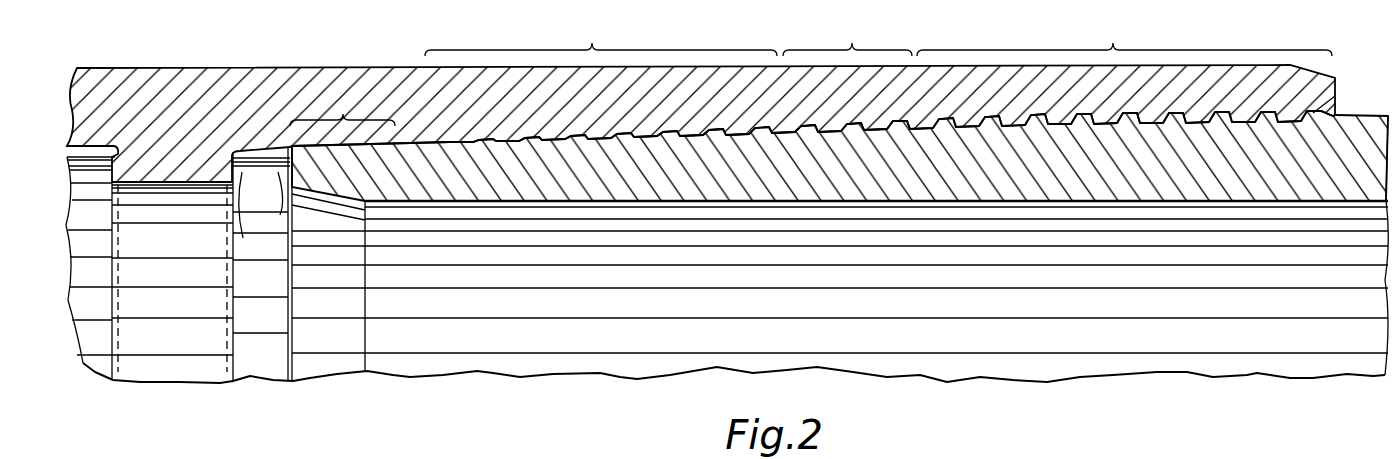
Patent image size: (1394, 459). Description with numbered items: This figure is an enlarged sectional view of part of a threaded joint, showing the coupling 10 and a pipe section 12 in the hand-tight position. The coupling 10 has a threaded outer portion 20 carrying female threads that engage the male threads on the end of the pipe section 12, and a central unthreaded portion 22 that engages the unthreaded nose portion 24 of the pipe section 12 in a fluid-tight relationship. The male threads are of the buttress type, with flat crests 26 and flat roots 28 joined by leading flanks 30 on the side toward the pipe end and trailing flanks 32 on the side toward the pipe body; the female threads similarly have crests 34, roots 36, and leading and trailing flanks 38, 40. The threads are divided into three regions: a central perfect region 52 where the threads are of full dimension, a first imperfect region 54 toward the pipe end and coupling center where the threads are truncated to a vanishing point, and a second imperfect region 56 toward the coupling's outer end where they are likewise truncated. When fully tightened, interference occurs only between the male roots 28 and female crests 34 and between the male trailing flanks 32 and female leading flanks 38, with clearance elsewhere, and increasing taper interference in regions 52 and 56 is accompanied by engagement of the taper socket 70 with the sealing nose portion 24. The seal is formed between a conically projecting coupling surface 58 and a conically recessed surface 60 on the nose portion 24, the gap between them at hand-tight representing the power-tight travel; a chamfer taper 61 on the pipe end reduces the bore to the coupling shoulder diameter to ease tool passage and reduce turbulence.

The coupling 10 is at (277, 57).
The pipe section 12 is at (1336, 136).
The threaded end or outer portion 20 is at (1312, 88).
The central unthreaded portion 22 is at (330, 78).
The nose portion 24 is at (342, 107).
The crests 26 is at (880, 129).
The roots 28 is at (795, 132).
The leading flanks 30 is at (800, 133).
The trailing flanks 32 is at (846, 131).
The crests 34 is at (702, 136).
The roots 36 is at (730, 135).
The leading flanks 38 is at (640, 136).
The trailing flanks 40 is at (692, 135).
The central perfect region 52 is at (847, 37).
The first imperfect region 54 is at (601, 37).
The second imperfect region 56 is at (1124, 37).
The conically projecting surface 58 is at (236, 226).
The conically recessed surface 60 is at (243, 237).
The chamfer taper 61 is at (322, 190).
The taper socket 70 is at (238, 183).